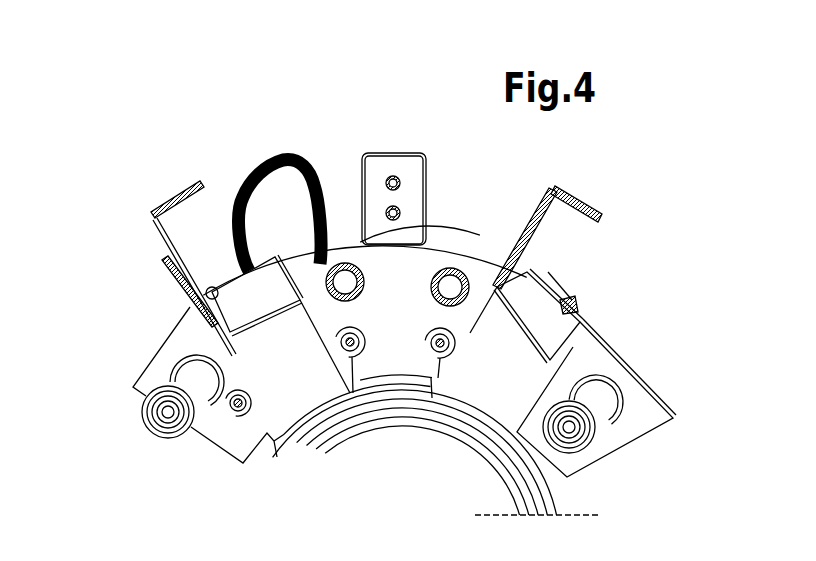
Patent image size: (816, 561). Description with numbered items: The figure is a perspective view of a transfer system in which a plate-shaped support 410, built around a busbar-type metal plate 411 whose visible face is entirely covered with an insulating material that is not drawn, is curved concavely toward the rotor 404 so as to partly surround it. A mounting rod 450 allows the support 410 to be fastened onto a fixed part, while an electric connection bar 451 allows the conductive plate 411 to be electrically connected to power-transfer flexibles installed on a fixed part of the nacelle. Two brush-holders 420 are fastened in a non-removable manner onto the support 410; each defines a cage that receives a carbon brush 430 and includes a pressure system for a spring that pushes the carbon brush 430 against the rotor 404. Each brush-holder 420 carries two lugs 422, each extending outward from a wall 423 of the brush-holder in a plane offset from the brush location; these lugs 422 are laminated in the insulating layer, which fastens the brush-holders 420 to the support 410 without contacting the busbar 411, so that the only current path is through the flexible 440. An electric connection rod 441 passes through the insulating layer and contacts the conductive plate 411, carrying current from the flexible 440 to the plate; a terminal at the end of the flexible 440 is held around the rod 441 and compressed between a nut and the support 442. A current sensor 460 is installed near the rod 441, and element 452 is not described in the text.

The rotor 404 is at (547, 500).
The support 410 is at (646, 357).
The metal plate 411 is at (150, 388).
The brush-holder 420 is at (220, 340).
The lug 422 is at (235, 412).
The wall 423 is at (360, 418).
The carbon brush 430 is at (565, 306).
The flexible 440 is at (278, 153).
The electric connection rod 441 is at (340, 282).
The support 442 is at (446, 290).
The mounting rod 450 is at (152, 408).
The electric connection bar 451 is at (410, 160).
The wire clip 452 is at (183, 192).
The current sensor 460 is at (488, 316).